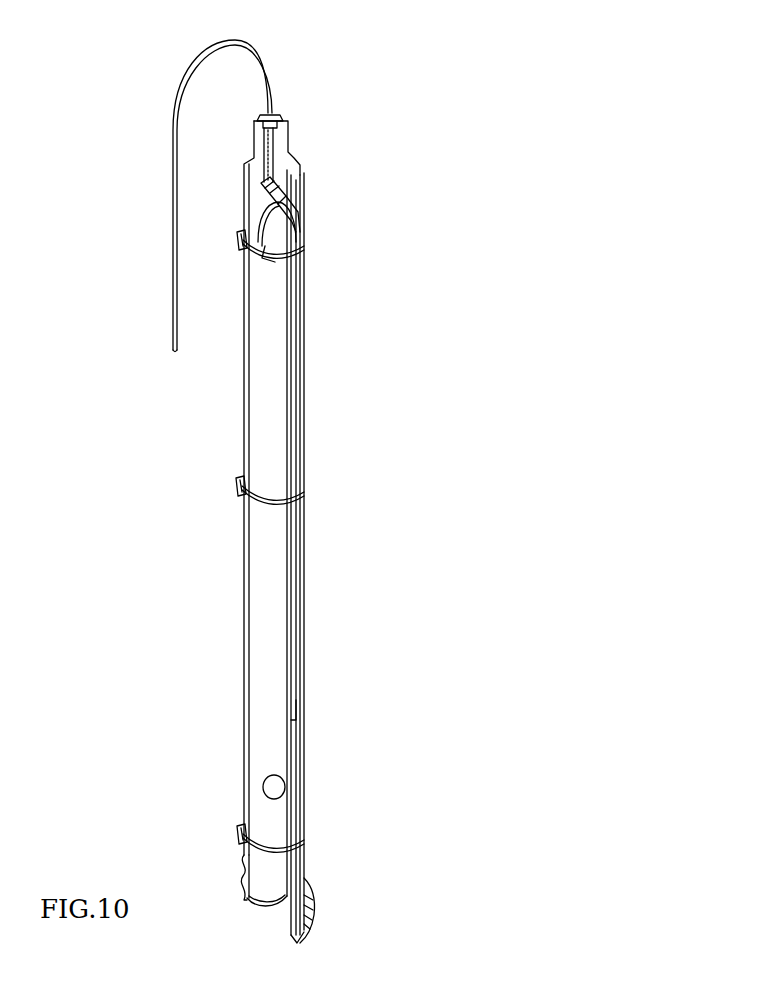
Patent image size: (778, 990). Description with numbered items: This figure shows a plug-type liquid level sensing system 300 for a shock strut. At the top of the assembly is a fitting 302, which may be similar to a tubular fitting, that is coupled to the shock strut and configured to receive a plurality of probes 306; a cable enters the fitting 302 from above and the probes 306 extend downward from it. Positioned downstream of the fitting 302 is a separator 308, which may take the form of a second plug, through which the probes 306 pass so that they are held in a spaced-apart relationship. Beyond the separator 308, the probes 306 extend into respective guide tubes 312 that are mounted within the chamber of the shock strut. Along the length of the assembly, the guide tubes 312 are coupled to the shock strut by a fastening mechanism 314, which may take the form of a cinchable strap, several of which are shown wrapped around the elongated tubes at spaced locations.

The liquid level sensing system 300 is at (326, 71).
The fitting 302 is at (277, 116).
The probes 306 is at (290, 213).
The separator 308 is at (278, 187).
The guide tubes 312 is at (295, 680).
The fastening mechanism 314 is at (304, 270).